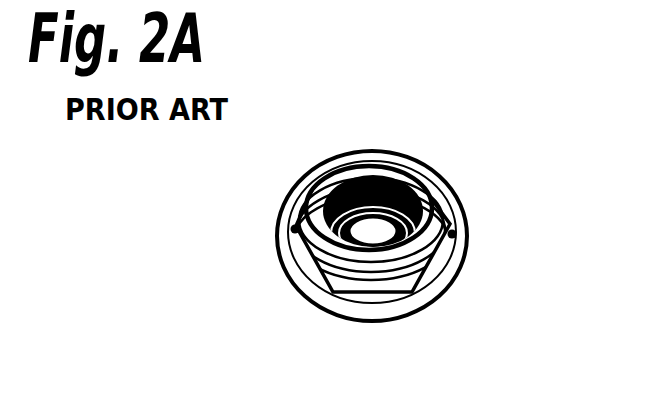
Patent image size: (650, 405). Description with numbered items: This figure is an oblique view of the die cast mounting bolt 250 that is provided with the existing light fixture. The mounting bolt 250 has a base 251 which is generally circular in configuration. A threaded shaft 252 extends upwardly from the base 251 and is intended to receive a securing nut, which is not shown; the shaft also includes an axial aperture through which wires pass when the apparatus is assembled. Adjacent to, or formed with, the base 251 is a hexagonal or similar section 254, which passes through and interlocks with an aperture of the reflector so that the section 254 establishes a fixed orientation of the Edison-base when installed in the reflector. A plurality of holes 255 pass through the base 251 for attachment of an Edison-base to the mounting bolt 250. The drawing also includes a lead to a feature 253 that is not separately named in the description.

The die cast mounting bolt 250 is at (381, 256).
The base 251 is at (447, 263).
The threaded shaft 252 is at (330, 200).
The threaded bore 253 is at (403, 184).
The hexagonal section 254 is at (348, 293).
The holes 255 is at (290, 229).